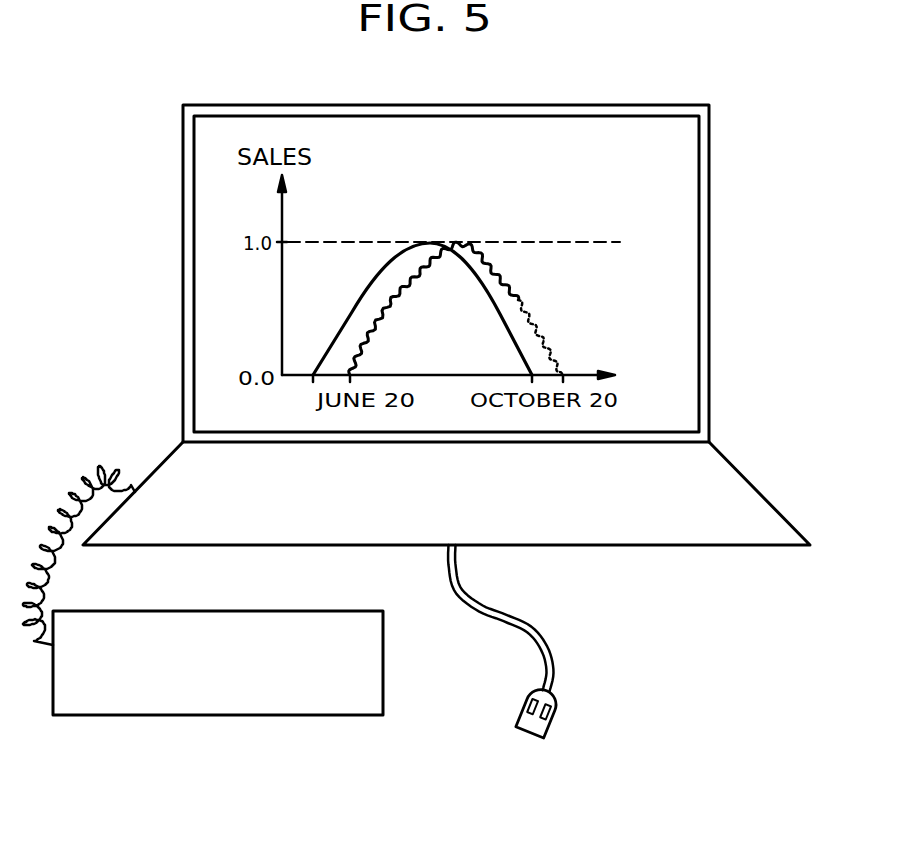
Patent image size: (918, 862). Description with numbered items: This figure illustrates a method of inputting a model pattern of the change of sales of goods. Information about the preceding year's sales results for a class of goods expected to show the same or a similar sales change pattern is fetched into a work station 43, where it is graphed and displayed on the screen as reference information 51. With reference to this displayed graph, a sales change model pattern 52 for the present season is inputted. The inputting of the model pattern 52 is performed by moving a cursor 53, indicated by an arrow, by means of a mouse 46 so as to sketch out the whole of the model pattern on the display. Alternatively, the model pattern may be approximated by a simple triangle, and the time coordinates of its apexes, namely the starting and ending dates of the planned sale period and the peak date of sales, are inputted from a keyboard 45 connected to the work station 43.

The work station 43 is at (183, 162).
The keyboard 45 is at (155, 715).
The mouse 46 is at (558, 718).
The reference information 51 is at (372, 283).
The sales change model pattern 52 is at (495, 268).
The cursor 53 is at (520, 296).